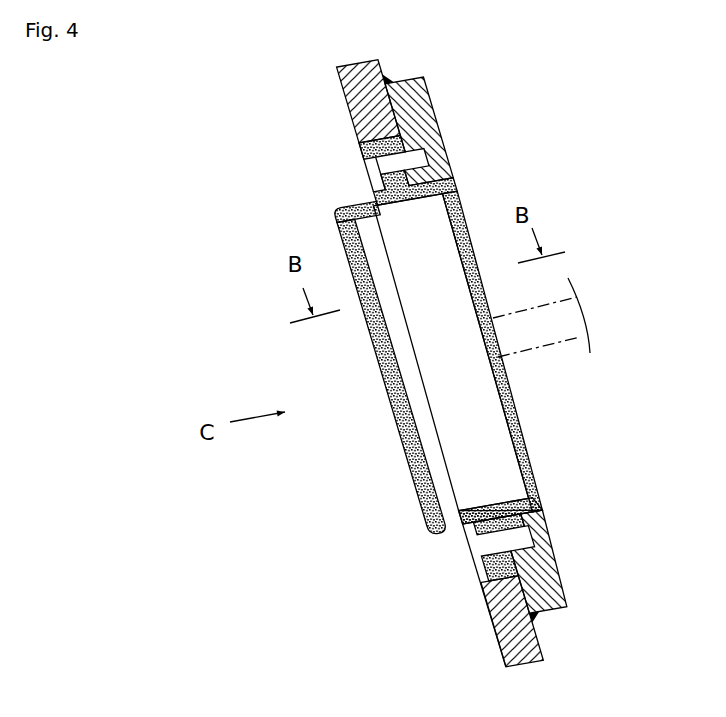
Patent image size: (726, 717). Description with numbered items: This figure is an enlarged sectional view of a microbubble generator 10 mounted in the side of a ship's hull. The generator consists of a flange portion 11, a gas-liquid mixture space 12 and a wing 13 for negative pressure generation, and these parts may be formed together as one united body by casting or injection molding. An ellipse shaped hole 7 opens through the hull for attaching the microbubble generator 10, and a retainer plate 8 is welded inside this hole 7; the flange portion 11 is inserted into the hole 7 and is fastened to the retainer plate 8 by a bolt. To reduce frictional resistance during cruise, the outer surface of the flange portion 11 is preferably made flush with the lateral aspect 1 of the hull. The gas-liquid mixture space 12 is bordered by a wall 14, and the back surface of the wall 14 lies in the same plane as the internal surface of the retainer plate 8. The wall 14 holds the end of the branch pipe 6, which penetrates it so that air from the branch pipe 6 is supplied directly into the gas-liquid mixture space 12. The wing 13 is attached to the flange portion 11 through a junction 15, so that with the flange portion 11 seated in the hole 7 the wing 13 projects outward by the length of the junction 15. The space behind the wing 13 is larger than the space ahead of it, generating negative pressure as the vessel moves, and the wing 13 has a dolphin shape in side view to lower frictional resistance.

The hull lateral aspect 1 is at (488, 622).
The branch pipe 6 is at (565, 342).
The ellipse shaped hole 7 is at (358, 150).
The retainer plate 8 is at (540, 562).
The microbubble generator 10 is at (401, 414).
The flange portion 11 is at (480, 571).
The gas-liquid mixture space 12 is at (439, 380).
The wing for negative pressure generation 13 is at (404, 441).
The wall 14 is at (526, 447).
The junction 15 is at (352, 207).